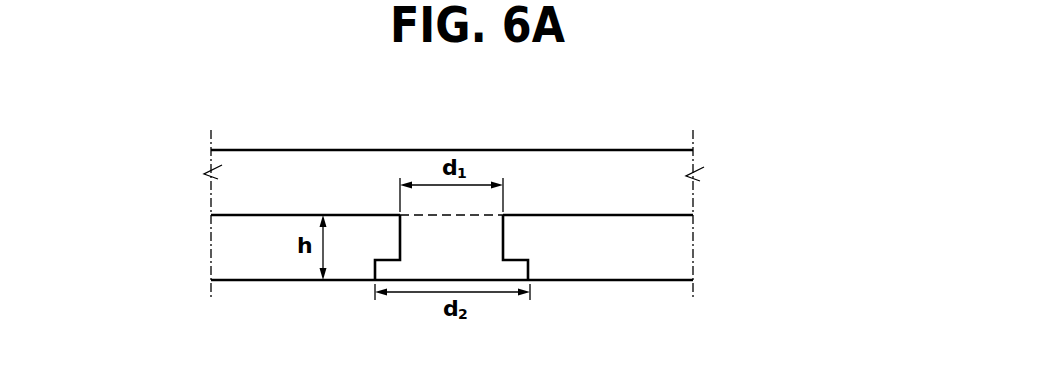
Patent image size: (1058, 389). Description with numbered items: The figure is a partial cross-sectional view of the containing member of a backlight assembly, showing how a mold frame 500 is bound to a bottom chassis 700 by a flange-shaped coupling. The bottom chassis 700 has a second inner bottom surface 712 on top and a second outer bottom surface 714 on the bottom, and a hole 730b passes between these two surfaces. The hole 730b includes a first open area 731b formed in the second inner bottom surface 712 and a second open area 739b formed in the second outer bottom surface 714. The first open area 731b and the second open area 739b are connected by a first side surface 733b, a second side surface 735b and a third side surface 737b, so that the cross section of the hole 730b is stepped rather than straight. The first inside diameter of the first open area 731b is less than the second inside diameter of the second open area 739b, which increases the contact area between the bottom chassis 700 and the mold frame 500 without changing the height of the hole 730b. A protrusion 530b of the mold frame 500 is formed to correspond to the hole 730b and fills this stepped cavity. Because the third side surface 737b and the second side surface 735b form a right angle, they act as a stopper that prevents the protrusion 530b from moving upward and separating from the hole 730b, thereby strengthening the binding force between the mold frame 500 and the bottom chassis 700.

The mold frame 500 is at (186, 177).
The bottom chassis 700 is at (186, 236).
The second inner bottom surface 712 is at (281, 215).
The second outer bottom surface 714 is at (280, 280).
The protrusion 530b is at (421, 232).
The hole 730b is at (811, 190).
The first open area 731b is at (483, 212).
The first side surface 733b is at (505, 228).
The second side surface 735b is at (520, 258).
The third side surface 737b is at (530, 275).
The second open area 739b is at (483, 281).